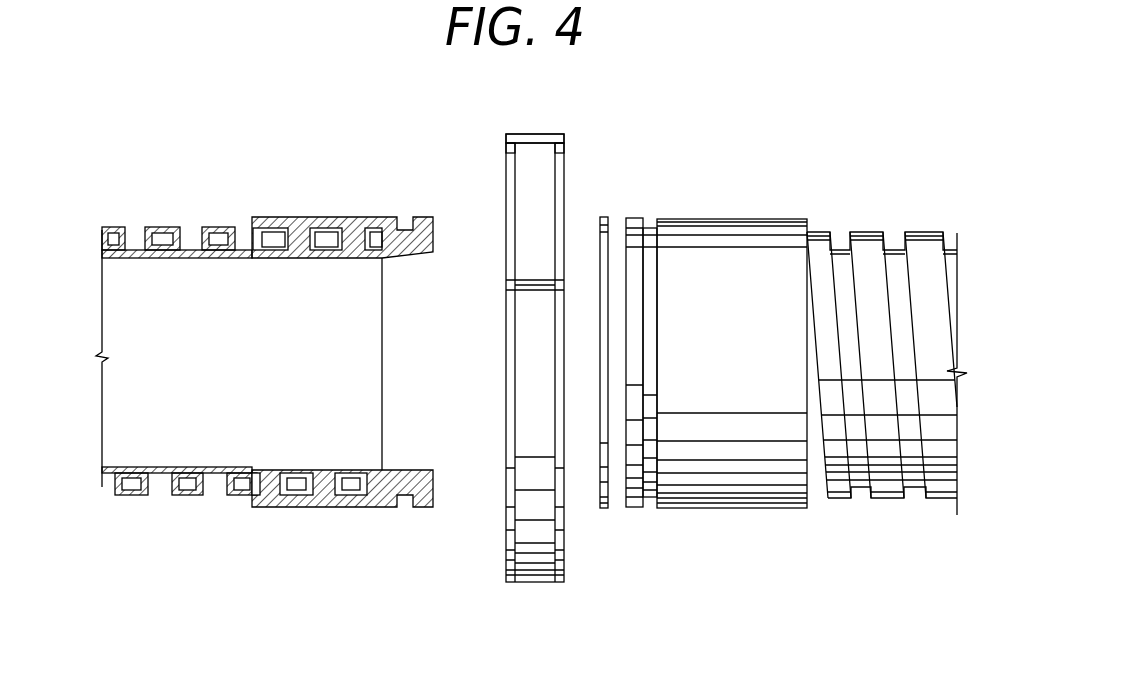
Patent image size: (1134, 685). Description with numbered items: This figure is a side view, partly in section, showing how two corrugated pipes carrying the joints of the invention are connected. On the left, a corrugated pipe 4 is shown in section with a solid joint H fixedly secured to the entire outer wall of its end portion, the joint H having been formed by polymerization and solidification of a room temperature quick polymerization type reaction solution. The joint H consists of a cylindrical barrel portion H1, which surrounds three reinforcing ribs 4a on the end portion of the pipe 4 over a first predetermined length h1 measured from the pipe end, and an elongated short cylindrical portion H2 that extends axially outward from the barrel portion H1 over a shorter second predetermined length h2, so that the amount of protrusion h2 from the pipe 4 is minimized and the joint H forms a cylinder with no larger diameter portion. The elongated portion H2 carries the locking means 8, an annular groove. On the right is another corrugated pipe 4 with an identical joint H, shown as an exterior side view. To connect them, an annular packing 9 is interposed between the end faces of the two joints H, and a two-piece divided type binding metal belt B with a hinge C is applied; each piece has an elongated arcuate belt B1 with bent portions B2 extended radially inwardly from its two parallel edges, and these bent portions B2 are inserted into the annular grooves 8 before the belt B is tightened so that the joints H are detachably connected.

The corrugated pipe 4 is at (217, 226).
The reinforcing rib 4a is at (163, 227).
The locking means 8 is at (407, 222).
The annular packing 9 is at (605, 492).
The binding metal belt B is at (500, 520).
The elongated arcuate belt B1 is at (541, 134).
The bent portion B2 is at (506, 142).
The hinge C is at (535, 280).
The joint H is at (393, 163).
The cylindrical barrel portion H1 is at (300, 228).
The elongated short cylindrical portion H2 is at (385, 228).
The first predetermined length h1 is at (376, 285).
The second predetermined length h2 is at (452, 285).